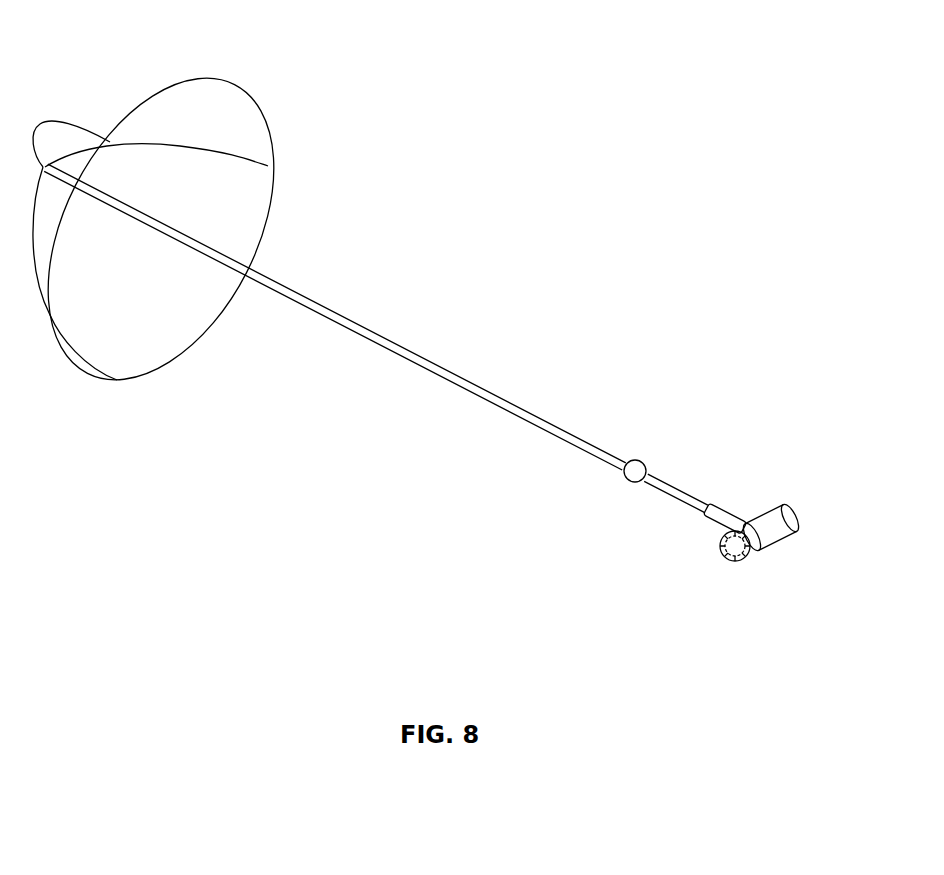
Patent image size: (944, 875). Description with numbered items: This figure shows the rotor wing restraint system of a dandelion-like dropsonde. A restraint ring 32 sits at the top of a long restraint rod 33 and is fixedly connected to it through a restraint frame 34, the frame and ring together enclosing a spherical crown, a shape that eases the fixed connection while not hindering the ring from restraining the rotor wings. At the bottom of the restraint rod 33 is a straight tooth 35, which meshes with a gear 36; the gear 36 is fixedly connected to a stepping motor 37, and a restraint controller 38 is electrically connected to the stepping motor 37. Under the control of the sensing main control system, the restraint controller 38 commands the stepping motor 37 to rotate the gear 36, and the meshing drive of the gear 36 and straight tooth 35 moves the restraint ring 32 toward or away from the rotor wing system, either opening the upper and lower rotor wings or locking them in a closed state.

The restraint ring 32 is at (243, 92).
The restraint rod 33 is at (343, 318).
The restraint frame 34 is at (53, 120).
The straight tooth 35 is at (723, 508).
The gear 36 is at (737, 560).
The stepping motor 37 is at (780, 528).
The restraint controller 38 is at (795, 507).